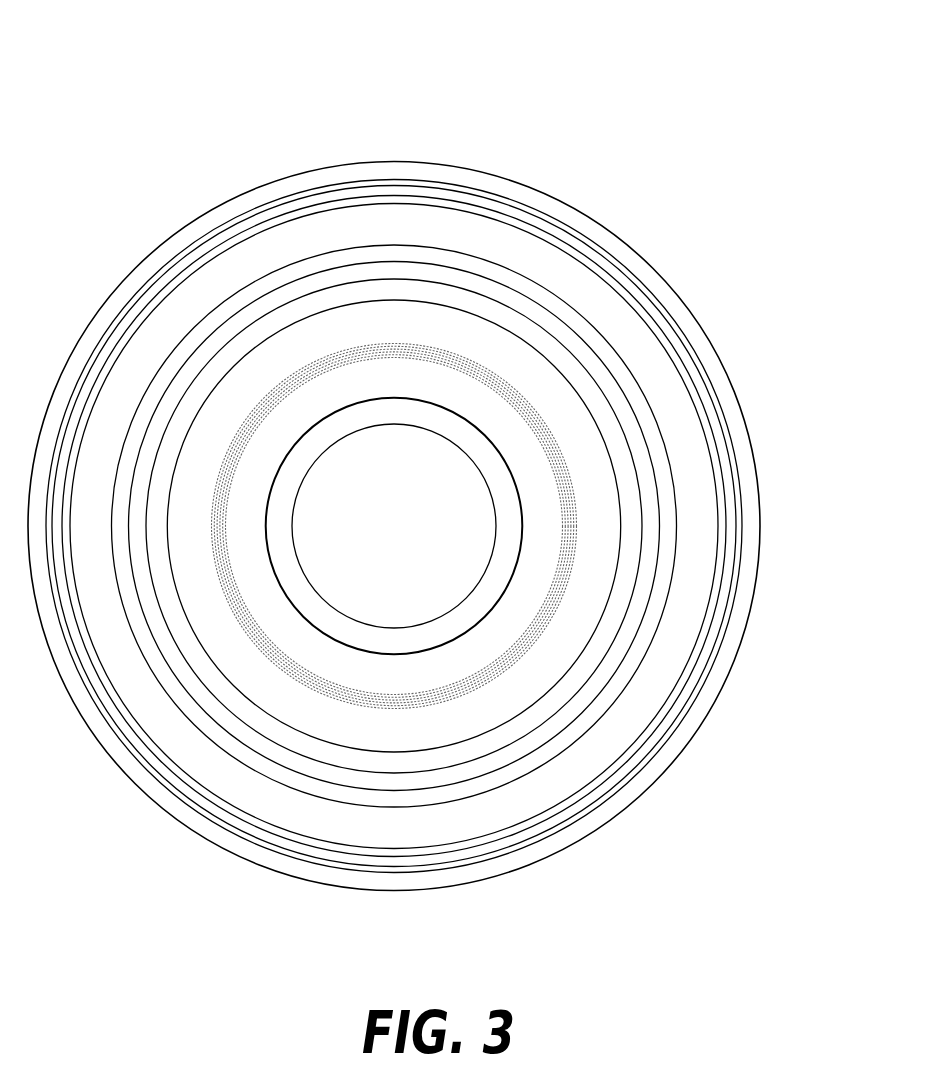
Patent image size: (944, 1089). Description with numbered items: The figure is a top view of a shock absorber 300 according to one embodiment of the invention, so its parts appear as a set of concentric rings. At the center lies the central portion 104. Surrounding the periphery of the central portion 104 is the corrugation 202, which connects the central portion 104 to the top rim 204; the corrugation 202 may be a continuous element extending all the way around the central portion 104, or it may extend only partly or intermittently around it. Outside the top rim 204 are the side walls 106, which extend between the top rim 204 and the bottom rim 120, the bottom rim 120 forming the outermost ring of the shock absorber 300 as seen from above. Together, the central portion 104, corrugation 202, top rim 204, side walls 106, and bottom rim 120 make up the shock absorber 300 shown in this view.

The shock absorber 300 is at (253, 80).
The central portion 104 is at (443, 386).
The corrugation 202 is at (469, 465).
The top rim 204 is at (471, 526).
The side walls 106 is at (493, 526).
The bottom rim 120 is at (443, 526).